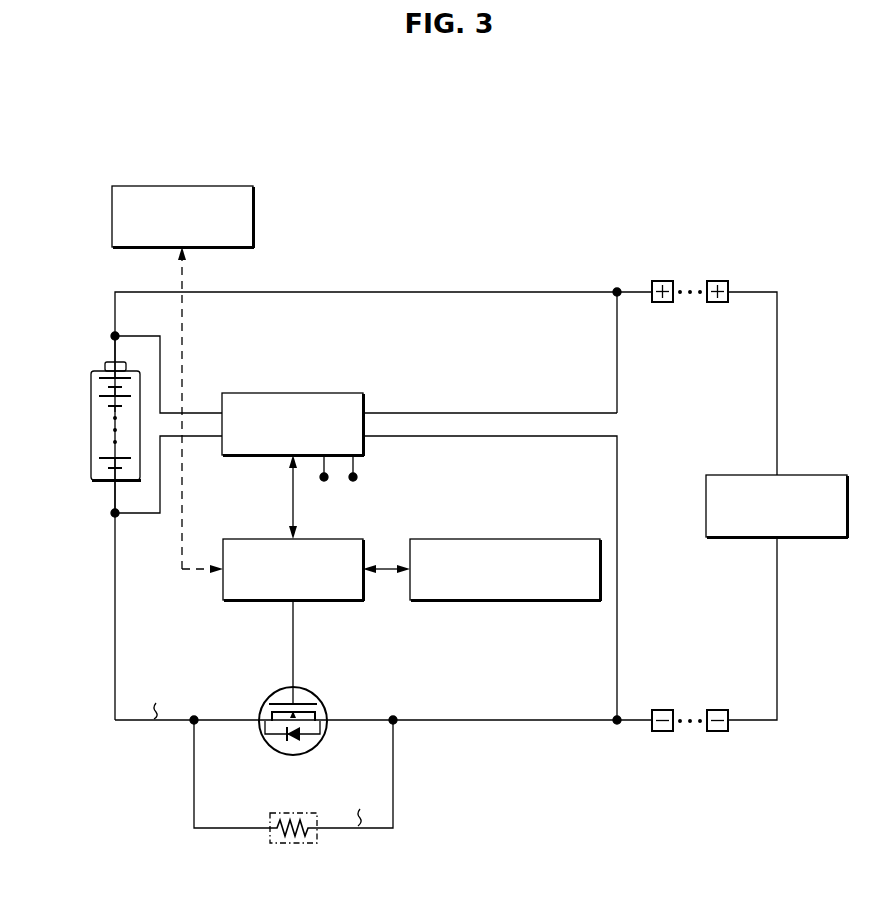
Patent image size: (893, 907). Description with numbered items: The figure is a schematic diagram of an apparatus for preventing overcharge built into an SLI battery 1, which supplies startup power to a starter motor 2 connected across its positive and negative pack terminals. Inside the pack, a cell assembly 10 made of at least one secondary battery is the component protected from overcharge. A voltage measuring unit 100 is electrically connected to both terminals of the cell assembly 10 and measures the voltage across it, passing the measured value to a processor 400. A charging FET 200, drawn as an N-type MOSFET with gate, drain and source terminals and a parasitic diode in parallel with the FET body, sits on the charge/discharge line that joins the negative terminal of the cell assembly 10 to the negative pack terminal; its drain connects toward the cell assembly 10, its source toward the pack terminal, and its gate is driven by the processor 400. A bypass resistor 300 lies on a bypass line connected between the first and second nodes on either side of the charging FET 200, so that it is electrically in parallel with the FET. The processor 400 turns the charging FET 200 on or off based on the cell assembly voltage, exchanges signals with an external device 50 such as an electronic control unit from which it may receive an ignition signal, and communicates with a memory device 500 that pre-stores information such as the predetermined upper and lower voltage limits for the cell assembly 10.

The SLI battery 1 is at (171, 110).
The starter motor 2 is at (821, 474).
The cell assembly 10 is at (90, 426).
The external device 50 is at (229, 186).
The voltage measuring unit 100 is at (338, 393).
The charging FET 200 is at (311, 689).
The bypass resistor 300 is at (291, 811).
The processor 400 is at (250, 539).
The memory device 500 is at (576, 539).